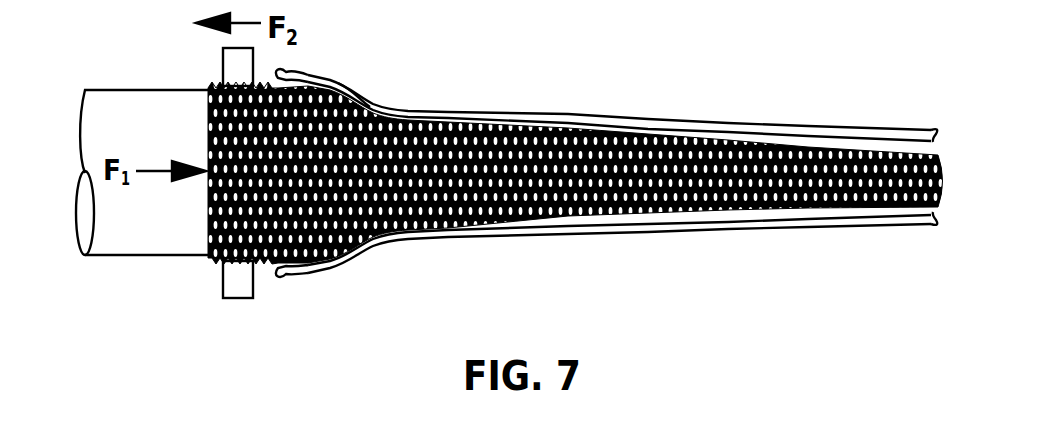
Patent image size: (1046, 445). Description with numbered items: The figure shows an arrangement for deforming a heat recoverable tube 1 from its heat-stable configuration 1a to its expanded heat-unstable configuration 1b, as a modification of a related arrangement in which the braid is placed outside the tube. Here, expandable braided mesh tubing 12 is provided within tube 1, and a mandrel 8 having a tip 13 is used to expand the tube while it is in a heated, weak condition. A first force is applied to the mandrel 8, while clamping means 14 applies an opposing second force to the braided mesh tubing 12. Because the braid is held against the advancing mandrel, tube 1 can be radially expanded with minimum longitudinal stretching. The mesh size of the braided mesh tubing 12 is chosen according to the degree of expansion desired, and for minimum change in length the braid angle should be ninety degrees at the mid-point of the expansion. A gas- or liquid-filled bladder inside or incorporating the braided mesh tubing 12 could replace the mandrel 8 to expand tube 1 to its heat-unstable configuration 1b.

The heat recoverable tube 1 is at (718, 106).
The heat-stable configuration 1a is at (702, 224).
The heat-unstable configuration 1b is at (285, 270).
The mandrel 8 is at (126, 240).
The braided mesh tubing 12 is at (345, 95).
The tip 13 is at (566, 221).
The clamping means 14 is at (213, 54).